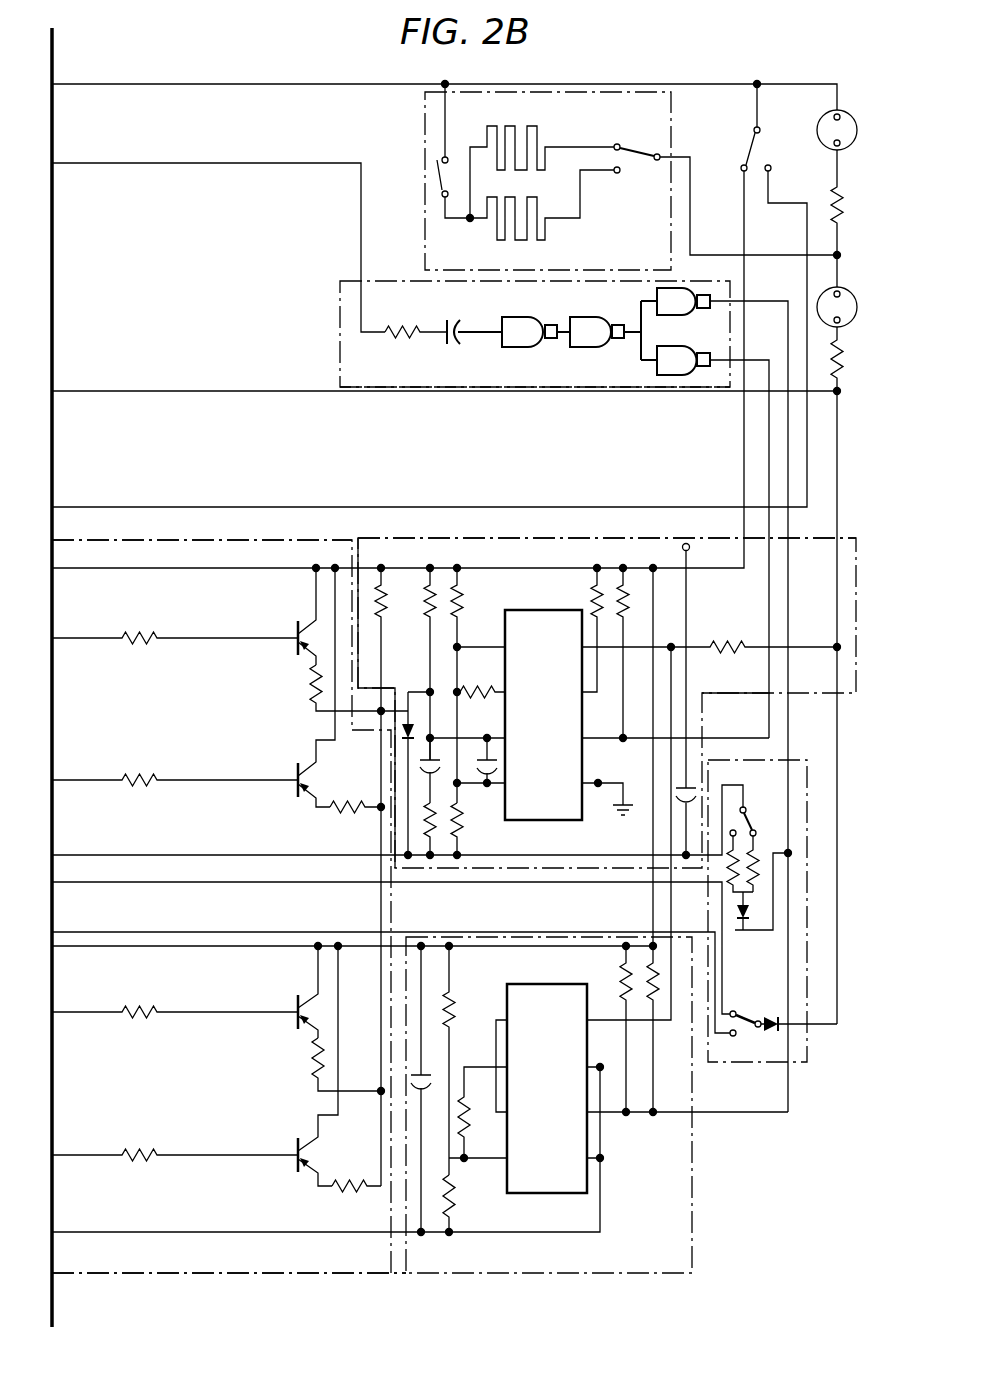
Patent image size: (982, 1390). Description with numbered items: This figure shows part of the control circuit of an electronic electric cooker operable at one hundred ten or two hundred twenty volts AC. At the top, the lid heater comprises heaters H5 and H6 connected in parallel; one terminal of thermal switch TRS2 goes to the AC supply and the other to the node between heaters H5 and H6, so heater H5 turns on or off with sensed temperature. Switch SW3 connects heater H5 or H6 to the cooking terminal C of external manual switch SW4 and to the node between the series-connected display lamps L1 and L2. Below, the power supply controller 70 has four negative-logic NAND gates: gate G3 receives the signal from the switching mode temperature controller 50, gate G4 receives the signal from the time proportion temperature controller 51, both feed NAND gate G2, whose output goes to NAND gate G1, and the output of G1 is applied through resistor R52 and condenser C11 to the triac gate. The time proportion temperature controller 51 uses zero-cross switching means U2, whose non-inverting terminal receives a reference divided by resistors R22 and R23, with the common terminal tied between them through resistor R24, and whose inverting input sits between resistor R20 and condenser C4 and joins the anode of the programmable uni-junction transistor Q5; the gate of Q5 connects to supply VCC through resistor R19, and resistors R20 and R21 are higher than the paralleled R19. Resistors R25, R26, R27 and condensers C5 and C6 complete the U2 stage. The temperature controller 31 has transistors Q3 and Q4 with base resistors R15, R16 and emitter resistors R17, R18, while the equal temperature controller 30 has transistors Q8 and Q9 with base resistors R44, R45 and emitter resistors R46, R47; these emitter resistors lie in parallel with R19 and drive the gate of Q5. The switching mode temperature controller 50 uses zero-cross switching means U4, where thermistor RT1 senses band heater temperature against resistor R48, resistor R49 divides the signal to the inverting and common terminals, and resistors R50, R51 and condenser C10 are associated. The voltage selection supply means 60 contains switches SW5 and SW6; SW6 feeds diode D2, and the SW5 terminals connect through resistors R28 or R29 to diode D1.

The temperature controller 30 is at (278, 1274).
The temperature controller 31 is at (240, 537).
The switching mode temperature controller 50 is at (692, 1163).
The time proportion temperature controller 51 is at (485, 537).
The voltage selection supply means 60 is at (807, 880).
The power supply controller 70 is at (578, 388).
The thermal switch TRS2 is at (437, 172).
The heater H5 is at (542, 162).
The heater H6 is at (542, 218).
The switch SW3 is at (724, 190).
The external manual switch SW4 is at (760, 135).
The switch SW5 is at (760, 812).
The switch SW6 is at (751, 1030).
The warming display lamp L1 is at (847, 184).
The cooking display lamp L2 is at (847, 325).
The resistor R52 is at (416, 346).
The condenser C11 is at (472, 343).
The NAND gate G1 is at (536, 346).
The NAND gate G2 is at (613, 338).
The NAND gate G3 is at (722, 700).
The NAND gate G4 is at (713, 542).
The base resistor R15 is at (175, 628).
The base resistor R16 is at (175, 770).
The emitter resistor R17 is at (343, 688).
The emitter resistor R18 is at (357, 820).
The resistor R19 is at (381, 585).
The resistor R20 is at (414, 663).
The resistor R21 is at (430, 840).
The resistor R22 is at (478, 684).
The resistor R23 is at (473, 831).
The resistor R24 is at (480, 686).
The resistor R25 is at (581, 629).
The resistor R26 is at (623, 585).
The resistor R27 is at (711, 637).
The resistor R28 is at (755, 890).
The resistor R29 is at (731, 888).
The base resistor R44 is at (175, 1002).
The base resistor R45 is at (175, 1145).
The emitter resistor R46 is at (330, 1066).
The emitter resistor R47 is at (355, 1199).
The resistor R48 is at (465, 1205).
The resistor R49 is at (478, 1114).
The resistor R50 is at (624, 966).
The resistor R51 is at (652, 963).
The thermistor RT1 is at (463, 1059).
The transistor Q3 is at (315, 615).
The transistor Q4 is at (318, 686).
The programmable uni-junction transistor Q5 is at (408, 722).
The transistor Q8 is at (316, 991).
The transistor Q9 is at (320, 1065).
The condenser C4 is at (435, 760).
The condenser C5 is at (482, 765).
The condenser C6 is at (676, 790).
The condenser C10 is at (426, 1075).
The diode D1 is at (759, 906).
The diode D2 is at (771, 1017).
The zero-cross switching means U2 is at (544, 706).
The zero-cross switching means U4 is at (547, 1080).
The power supply VCC is at (703, 700).